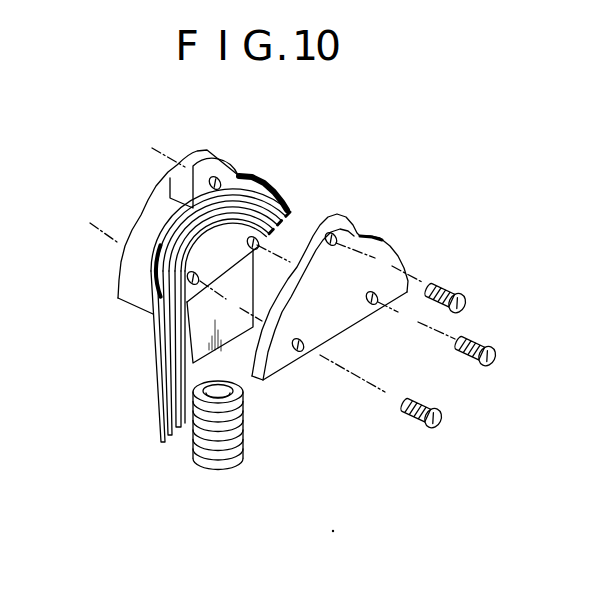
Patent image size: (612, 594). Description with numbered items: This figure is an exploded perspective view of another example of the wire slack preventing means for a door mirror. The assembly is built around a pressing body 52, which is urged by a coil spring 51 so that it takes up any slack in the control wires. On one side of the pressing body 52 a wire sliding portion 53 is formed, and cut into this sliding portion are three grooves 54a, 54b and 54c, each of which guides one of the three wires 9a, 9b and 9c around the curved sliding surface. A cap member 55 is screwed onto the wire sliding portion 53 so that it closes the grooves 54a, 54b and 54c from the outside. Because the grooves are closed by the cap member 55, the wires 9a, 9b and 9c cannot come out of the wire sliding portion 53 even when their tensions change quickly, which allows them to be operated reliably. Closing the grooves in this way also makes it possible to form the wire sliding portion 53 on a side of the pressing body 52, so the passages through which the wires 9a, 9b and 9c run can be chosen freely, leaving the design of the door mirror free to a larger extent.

The pressing body 52 is at (150, 189).
The wire sliding portion 53 is at (258, 175).
The groove 54a is at (245, 174).
The groove 54b is at (284, 204).
The groove 54c is at (291, 218).
The cap member 55 is at (393, 268).
The coil spring 51 is at (246, 449).
The wire 9a is at (160, 360).
The wire 9b is at (164, 388).
The wire 9c is at (166, 431).